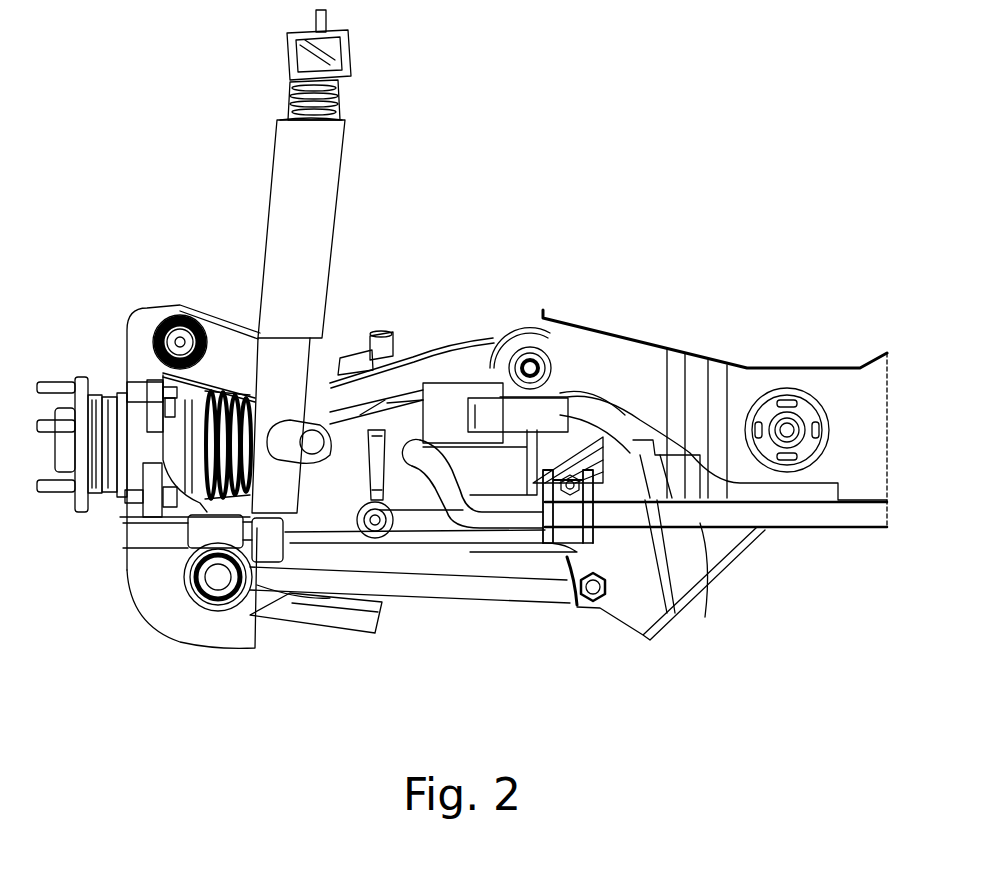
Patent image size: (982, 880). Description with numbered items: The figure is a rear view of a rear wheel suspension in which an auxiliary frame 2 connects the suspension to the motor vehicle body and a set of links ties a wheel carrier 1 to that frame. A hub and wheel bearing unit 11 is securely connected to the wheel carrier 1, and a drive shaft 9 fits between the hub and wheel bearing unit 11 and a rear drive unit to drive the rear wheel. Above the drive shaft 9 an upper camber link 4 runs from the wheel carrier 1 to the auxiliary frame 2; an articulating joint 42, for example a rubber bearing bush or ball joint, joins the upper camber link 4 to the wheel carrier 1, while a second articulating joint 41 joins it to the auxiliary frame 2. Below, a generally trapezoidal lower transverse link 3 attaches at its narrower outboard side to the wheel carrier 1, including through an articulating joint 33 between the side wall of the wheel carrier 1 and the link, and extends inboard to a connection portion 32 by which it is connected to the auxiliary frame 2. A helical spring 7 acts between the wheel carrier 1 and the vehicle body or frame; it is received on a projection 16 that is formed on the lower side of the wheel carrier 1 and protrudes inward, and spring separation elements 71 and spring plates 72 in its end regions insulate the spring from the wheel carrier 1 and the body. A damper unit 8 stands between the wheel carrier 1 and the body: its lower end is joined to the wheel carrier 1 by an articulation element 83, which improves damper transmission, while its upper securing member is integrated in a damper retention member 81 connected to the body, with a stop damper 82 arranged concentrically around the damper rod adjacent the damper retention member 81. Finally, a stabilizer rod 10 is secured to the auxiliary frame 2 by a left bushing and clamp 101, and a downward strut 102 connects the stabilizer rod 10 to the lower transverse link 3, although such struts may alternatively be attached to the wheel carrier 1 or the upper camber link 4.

The wheel carrier 1 is at (132, 305).
The hub and wheel bearing unit 11 is at (92, 487).
The articulating joint 42 is at (180, 316).
The damper unit 8 is at (320, 163).
The damper retention member 81 is at (352, 45).
The stop damper 82 is at (290, 90).
The articulation element 83 is at (262, 555).
The upper camber link 4 is at (452, 362).
The articulating joint 41 is at (531, 368).
The helical spring 7 is at (390, 418).
The spring separation element 71 is at (346, 358).
The spring plate 72 is at (320, 600).
The projection 16 is at (362, 618).
The lower transverse link 3 is at (450, 565).
The articulating joint 33 is at (218, 580).
The connection portion 32 is at (594, 590).
The auxiliary frame 2 is at (697, 346).
The stabilizer rod 10 is at (812, 513).
The bushing and clamp 101 is at (570, 525).
The drive shaft 9 is at (497, 510).
The downward strut 102 is at (376, 535).